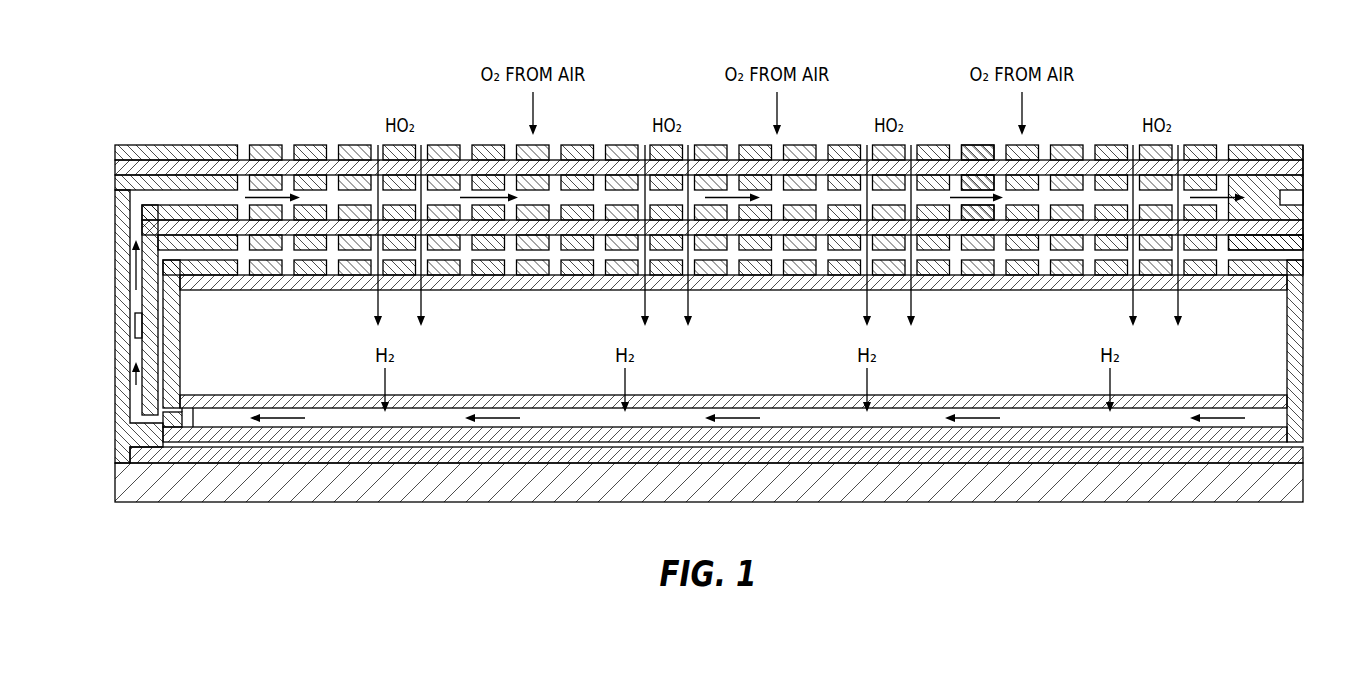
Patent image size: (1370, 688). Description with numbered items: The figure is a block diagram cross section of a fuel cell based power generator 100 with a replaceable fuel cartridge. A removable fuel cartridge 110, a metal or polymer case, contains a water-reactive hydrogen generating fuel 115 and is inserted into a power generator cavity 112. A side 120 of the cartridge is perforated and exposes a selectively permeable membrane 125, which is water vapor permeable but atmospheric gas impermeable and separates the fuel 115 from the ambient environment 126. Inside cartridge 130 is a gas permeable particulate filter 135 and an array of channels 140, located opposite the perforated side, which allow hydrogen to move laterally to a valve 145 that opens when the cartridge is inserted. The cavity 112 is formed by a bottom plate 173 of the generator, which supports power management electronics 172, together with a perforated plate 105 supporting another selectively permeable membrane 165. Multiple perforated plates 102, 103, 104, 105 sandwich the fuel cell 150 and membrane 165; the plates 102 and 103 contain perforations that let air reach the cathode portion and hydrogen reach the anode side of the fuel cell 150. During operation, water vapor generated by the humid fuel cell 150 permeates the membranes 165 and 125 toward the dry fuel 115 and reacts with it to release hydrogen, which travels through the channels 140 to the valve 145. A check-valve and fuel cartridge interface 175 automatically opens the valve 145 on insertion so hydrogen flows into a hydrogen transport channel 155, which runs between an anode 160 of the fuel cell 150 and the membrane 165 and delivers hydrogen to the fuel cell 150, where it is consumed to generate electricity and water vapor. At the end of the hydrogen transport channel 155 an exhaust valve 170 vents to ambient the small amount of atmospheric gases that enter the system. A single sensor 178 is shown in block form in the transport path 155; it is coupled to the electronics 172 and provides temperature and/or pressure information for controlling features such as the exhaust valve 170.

The fuel cell based power generator 100 is at (177, 143).
The perforated plate 102 is at (978, 153).
The perforated plate 103 is at (973, 183).
The perforated plate 104 is at (978, 213).
The perforated plate 105 is at (1285, 242).
The removable fuel cartridge 110 is at (1304, 305).
The power generator cavity 112 is at (1222, 253).
The water-reactive hydrogen generating fuel 115 is at (1265, 370).
The perforated side of the cartridge 120 is at (1285, 281).
The selectively permeable membrane 125 is at (1075, 280).
The ambient environment 126 is at (1294, 258).
The cartridge interior 130 is at (1177, 436).
The gas permeable particulate filter 135 is at (1175, 404).
The array of channels 140 is at (563, 418).
The valve 145 is at (173, 427).
The fuel cell 150 is at (1045, 170).
The hydrogen transport channel 155 is at (180, 197).
The anode 160 is at (1287, 172).
The selectively permeable membrane 165 is at (1287, 226).
The exhaust valve 170 is at (1297, 196).
The power management electronics 172 is at (1232, 489).
The bottom plate 173 is at (1292, 456).
The check-valve and fuel cartridge interface 175 is at (158, 420).
The sensor 178 is at (135, 322).